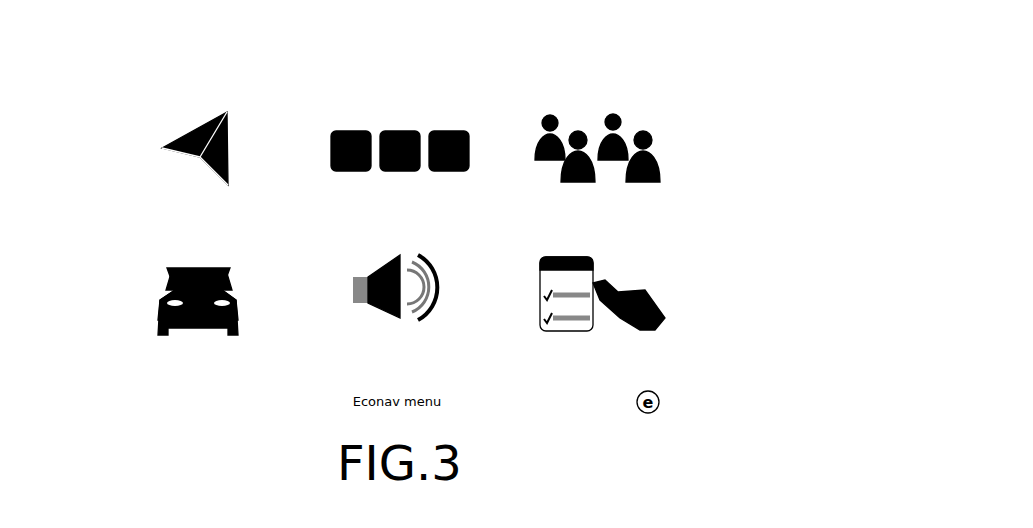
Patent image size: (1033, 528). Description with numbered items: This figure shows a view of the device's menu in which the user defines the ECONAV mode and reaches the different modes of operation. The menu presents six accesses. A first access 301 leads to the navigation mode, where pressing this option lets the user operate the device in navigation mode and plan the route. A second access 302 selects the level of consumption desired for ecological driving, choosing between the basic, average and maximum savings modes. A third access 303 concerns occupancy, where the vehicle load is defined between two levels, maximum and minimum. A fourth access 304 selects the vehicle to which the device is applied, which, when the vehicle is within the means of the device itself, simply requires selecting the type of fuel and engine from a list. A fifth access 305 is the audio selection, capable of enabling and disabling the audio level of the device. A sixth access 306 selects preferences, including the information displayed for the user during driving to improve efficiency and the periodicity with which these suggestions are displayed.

The first access 301 is at (147, 138).
The second access 302 is at (400, 136).
The third access 303 is at (650, 168).
The fourth access 304 is at (148, 253).
The fifth access 305 is at (375, 302).
The sixth access 306 is at (613, 275).